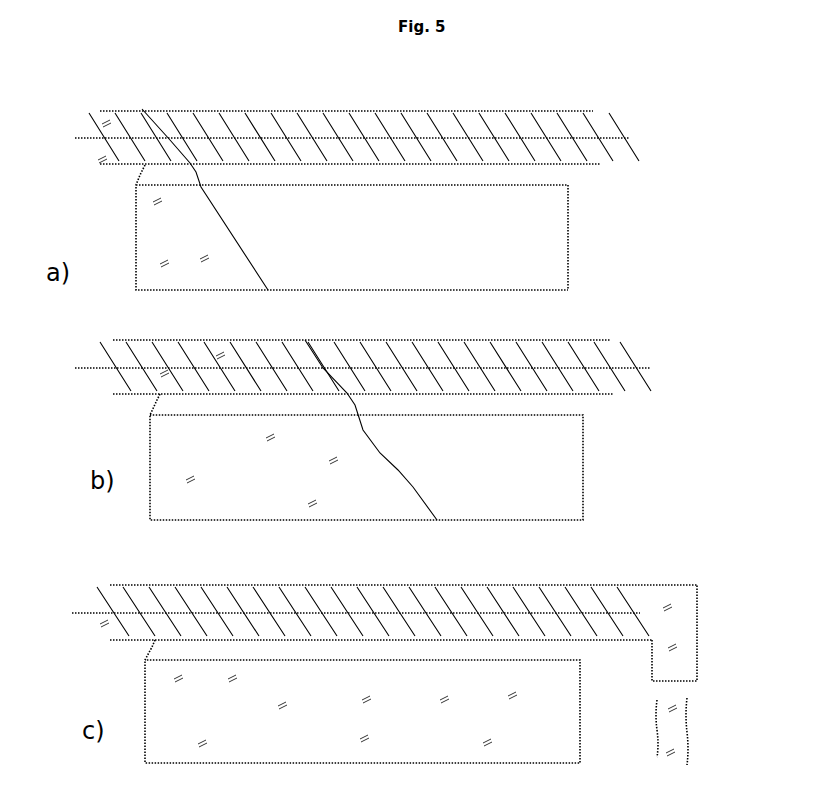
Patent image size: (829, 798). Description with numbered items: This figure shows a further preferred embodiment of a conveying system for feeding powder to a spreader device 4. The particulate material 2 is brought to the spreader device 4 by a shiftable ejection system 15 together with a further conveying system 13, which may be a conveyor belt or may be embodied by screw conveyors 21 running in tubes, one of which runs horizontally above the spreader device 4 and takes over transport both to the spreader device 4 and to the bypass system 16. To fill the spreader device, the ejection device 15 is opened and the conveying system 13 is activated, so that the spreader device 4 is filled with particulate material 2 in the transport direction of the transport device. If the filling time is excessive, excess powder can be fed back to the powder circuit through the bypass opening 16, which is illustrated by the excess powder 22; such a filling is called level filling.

The particulate material 2 is at (163, 242).
The spreader device 4 is at (570, 243).
The conveying system 13 is at (230, 111).
The ejection system 15 is at (385, 112).
The screw conveyors 21 is at (593, 122).
The bypass system 16 is at (698, 633).
The excess powder fed back via bypass 22 is at (667, 742).